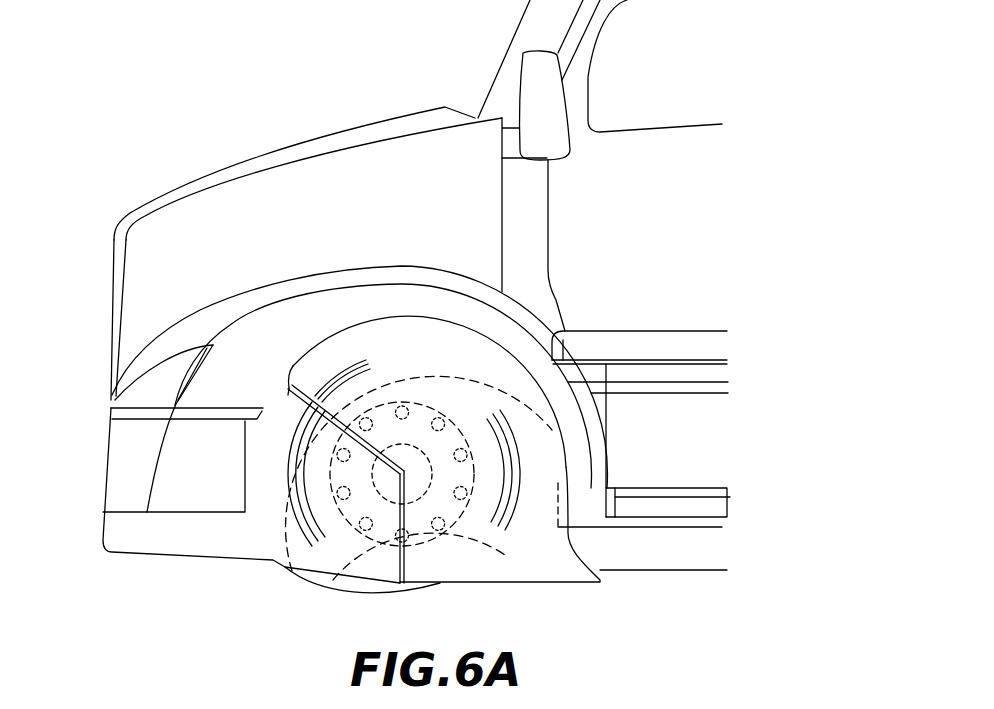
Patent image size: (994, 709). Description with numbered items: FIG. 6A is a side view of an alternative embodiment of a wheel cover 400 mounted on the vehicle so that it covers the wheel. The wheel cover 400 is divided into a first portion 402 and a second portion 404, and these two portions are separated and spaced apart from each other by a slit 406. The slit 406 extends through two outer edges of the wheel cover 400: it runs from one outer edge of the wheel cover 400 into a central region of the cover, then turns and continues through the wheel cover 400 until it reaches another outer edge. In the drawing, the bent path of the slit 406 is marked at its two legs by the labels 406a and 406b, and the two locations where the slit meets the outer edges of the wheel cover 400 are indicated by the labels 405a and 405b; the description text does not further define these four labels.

The wheel cover 400 is at (524, 335).
The first portion 402 is at (322, 550).
The second portion 404 is at (533, 475).
The upper edge of fairing 405a is at (286, 403).
The lower edge of fairing 405b is at (418, 594).
The slit 406 is at (292, 452).
The upper portion of wheel shield 406a is at (366, 447).
The lower portion of wheel shield 406b is at (404, 522).